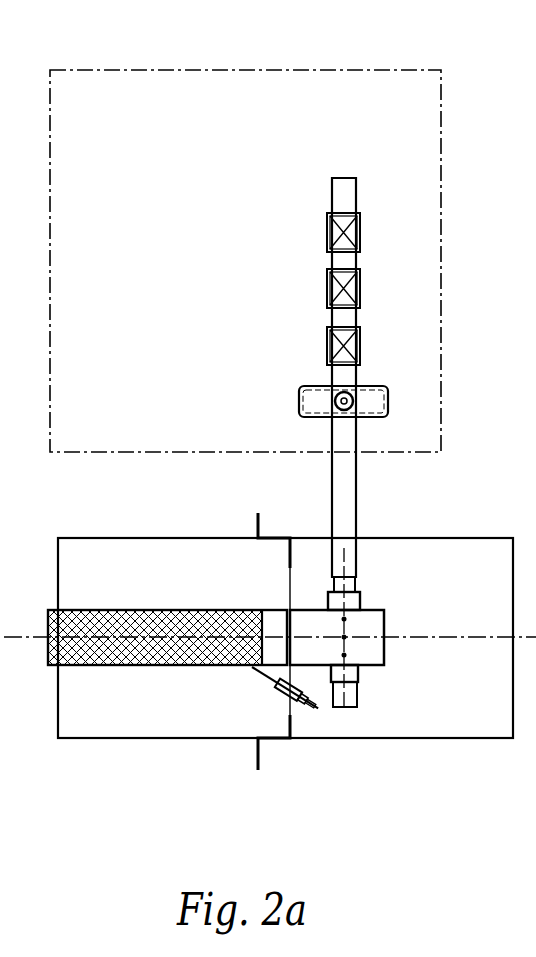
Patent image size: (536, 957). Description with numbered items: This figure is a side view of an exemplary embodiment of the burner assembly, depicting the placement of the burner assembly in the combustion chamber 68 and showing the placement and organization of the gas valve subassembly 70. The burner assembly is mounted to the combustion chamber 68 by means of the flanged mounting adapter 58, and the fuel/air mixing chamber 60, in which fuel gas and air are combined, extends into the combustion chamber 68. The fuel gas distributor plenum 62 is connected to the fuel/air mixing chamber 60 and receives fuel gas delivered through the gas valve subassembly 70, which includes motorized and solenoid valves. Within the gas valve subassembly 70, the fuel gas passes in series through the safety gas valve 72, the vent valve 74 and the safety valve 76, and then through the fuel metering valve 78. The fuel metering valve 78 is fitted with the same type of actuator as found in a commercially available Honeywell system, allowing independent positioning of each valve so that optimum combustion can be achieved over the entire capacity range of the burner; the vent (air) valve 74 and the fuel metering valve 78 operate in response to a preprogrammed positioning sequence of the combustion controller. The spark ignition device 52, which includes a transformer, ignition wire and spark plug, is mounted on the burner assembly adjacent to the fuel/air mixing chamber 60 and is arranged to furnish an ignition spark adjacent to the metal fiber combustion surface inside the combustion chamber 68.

The gas valve subassembly 70 is at (362, 146).
The safety gas valve 72 is at (327, 240).
The vent valve 74 is at (327, 296).
The safety valve 76 is at (327, 352).
The fuel metering valve 78 is at (299, 402).
The flanged mounting adapter 58 is at (256, 525).
The fuel/air mixing chamber 60 is at (312, 608).
The fuel gas distributor plenum 62 is at (360, 600).
The combustion chamber 68 is at (130, 738).
The spark ignition device 52 is at (275, 680).